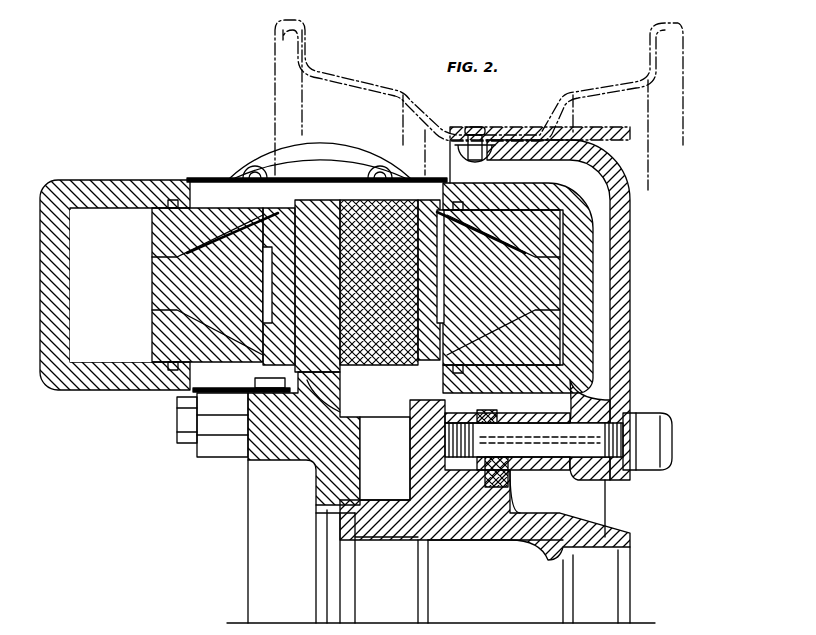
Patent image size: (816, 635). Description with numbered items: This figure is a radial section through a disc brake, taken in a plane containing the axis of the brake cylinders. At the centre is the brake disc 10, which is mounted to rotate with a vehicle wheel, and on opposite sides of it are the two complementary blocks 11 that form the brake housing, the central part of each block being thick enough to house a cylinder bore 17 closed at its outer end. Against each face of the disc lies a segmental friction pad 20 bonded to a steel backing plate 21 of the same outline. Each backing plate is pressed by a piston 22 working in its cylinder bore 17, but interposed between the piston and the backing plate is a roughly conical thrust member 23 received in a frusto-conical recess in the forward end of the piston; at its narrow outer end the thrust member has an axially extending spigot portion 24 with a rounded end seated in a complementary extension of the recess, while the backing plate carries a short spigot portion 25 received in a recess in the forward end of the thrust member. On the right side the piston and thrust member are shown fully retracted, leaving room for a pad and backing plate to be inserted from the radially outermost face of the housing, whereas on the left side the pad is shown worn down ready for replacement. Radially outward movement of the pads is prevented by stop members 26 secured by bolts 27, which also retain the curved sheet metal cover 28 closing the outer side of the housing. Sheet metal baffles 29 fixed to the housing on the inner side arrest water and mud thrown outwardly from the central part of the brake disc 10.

The brake disc 10 is at (342, 176).
The complementary block 11 is at (56, 313).
The cylinder bore 17 is at (86, 219).
The friction pad 20 is at (322, 166).
The steel backing plate 21 is at (263, 182).
The piston 22 is at (552, 290).
The thrust member 23 is at (233, 247).
The spigot portion 24 is at (185, 273).
The short spigot portion 25 is at (247, 237).
The stop member 26 is at (290, 166).
The bolt 27 is at (254, 168).
The curved sheet metal cover 28 is at (361, 176).
The sheet metal baffle 29 is at (221, 400).